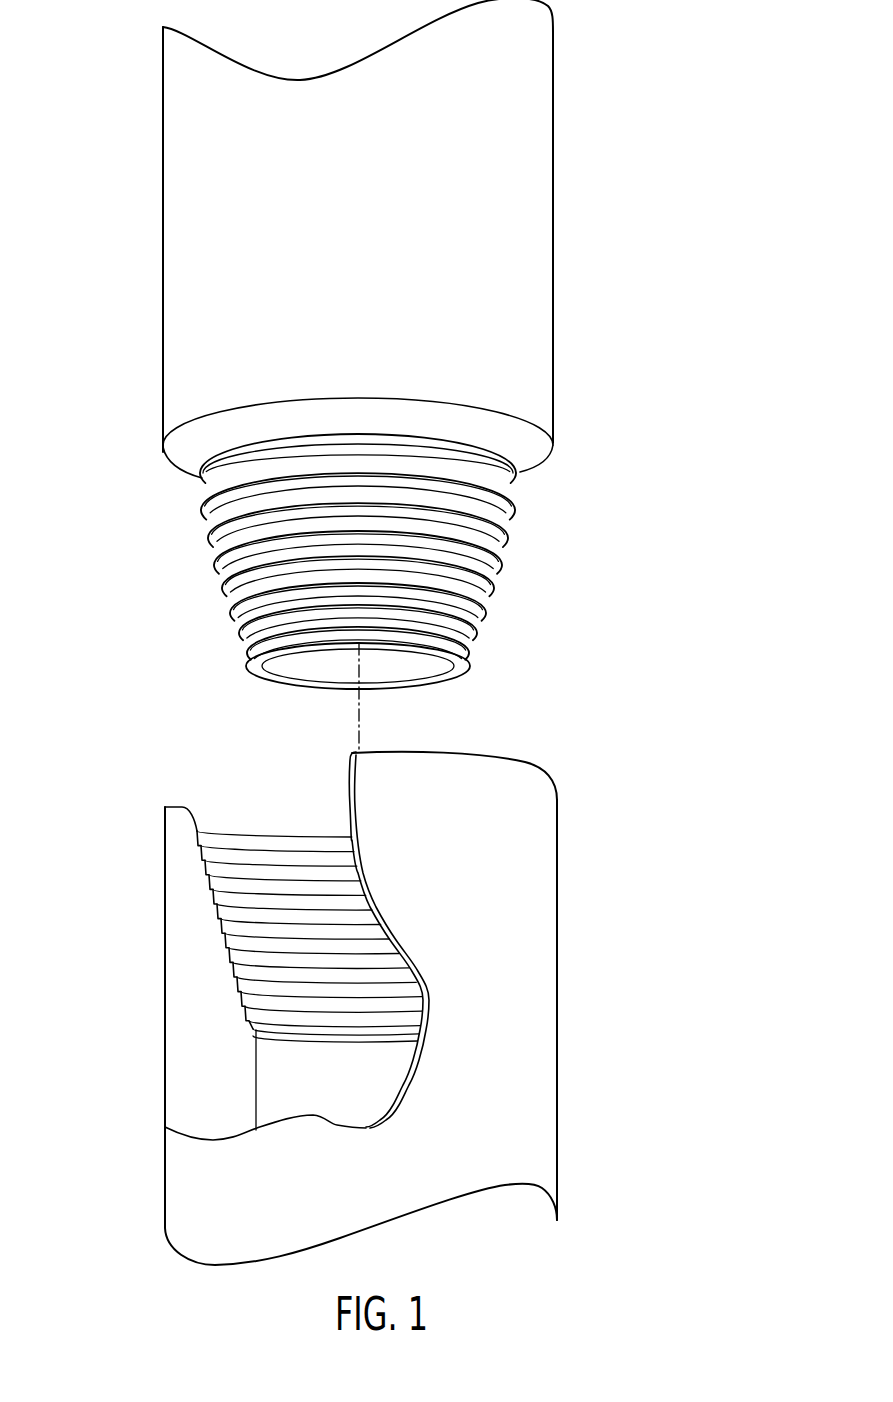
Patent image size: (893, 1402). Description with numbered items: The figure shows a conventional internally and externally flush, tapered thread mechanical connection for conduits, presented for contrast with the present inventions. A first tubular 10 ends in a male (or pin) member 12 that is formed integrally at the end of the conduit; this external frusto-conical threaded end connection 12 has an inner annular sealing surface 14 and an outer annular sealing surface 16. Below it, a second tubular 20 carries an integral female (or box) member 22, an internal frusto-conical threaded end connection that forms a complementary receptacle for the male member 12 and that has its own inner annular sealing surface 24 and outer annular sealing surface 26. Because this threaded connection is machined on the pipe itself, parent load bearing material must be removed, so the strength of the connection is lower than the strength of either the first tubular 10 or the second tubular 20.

The first tubular 10 is at (357, 225).
The male member 12 is at (485, 565).
The inner annular sealing surface 14 is at (205, 440).
The outer annular sealing surface 16 is at (258, 671).
The second tubular 20 is at (484, 1152).
The female member 22 is at (252, 952).
The inner annular sealing surface 24 is at (253, 1023).
The outer annular sealing surface 26 is at (232, 835).